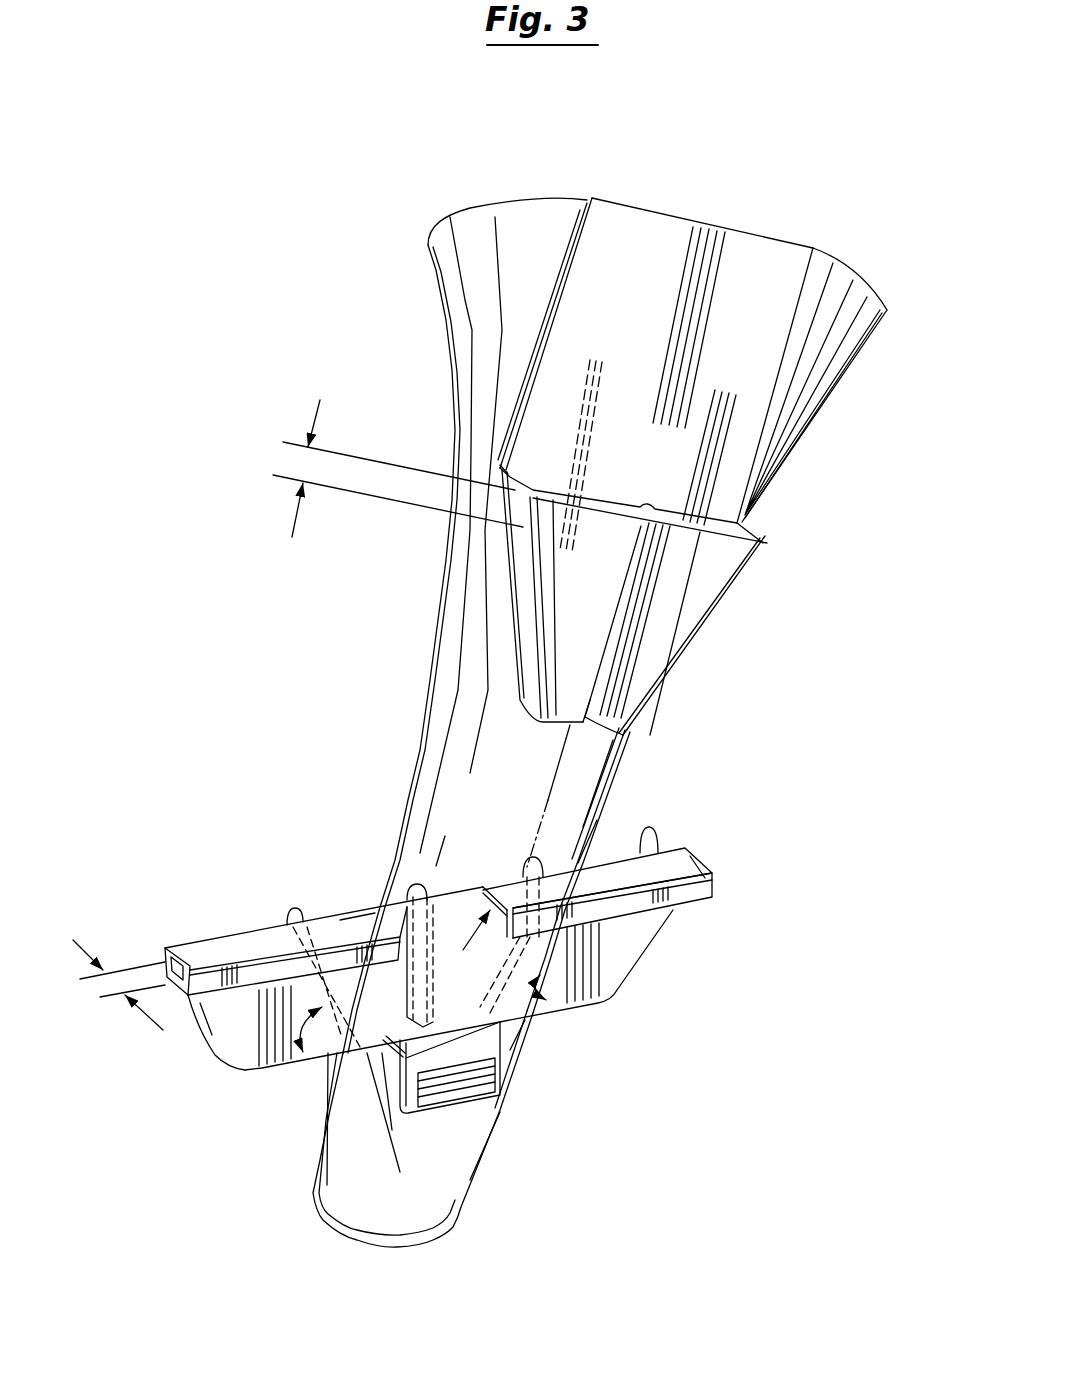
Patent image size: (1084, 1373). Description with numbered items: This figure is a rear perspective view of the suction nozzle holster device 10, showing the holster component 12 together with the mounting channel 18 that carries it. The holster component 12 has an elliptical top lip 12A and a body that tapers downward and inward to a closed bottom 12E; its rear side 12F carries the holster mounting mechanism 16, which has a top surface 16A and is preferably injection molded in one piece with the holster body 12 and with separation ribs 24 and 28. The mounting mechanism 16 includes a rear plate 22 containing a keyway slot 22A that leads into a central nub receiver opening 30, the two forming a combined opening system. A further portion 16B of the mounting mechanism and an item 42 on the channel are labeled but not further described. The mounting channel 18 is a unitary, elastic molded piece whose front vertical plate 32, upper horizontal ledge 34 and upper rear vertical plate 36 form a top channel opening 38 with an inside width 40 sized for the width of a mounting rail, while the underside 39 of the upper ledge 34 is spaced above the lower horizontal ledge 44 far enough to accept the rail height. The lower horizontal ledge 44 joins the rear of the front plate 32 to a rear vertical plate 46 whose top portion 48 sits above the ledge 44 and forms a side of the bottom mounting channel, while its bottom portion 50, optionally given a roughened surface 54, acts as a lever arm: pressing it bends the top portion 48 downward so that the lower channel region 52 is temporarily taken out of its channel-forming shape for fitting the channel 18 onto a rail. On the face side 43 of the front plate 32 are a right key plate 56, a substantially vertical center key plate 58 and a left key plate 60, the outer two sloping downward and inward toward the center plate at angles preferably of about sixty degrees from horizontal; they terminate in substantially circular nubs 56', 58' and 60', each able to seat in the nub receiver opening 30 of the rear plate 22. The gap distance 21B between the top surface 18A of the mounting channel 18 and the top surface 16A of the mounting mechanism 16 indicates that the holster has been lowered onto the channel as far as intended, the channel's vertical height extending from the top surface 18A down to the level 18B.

The suction nozzle holster device 10 is at (738, 210).
The holster component 12 is at (807, 380).
The top lip 12A is at (848, 285).
The closed bottom 12E is at (437, 1250).
The rear side 12F is at (545, 253).
The holster mounting mechanism 16 is at (573, 600).
The top surface of the holster mounting component 16A is at (609, 500).
The lower extension of center panel 16B is at (562, 733).
The mounting channel 18 is at (313, 905).
The top surface of the mounting channel 18A is at (660, 867).
The lower reference of the mounting channel 18B is at (582, 1012).
The gap distance 21B is at (305, 465).
The rear plate 22 is at (712, 556).
The keyway slot 22A is at (630, 592).
The separation rib 24 is at (523, 558).
The separation rib 28 is at (727, 607).
The nub receiver opening 30 is at (648, 506).
The front vertical plate 32 is at (623, 952).
The upper horizontal ledge 34 is at (690, 848).
The upper rear vertical plate 36 is at (198, 990).
The top channel opening 38 is at (165, 975).
The underside of the upper horizontal ledge 39 is at (168, 972).
The inside width 40 is at (118, 1004).
The post 42 is at (457, 927).
The face side 43 is at (357, 905).
The lower horizontal ledge 44 is at (385, 1045).
The rear vertical plate 46 is at (505, 1082).
The top portion of the rear vertical plate 48 is at (533, 1010).
The bottom portion of the rear vertical plate 50 is at (455, 1097).
The lower channel region 52 is at (390, 1103).
The roughened surface 54 is at (480, 1173).
The right side key plate 56 is at (240, 888).
The key plate nub 56' is at (270, 920).
The center key plate 58 is at (482, 808).
The key plate nub 58' is at (361, 824).
The left side key plate 60 is at (594, 969).
The key plate nub 60' is at (707, 803).